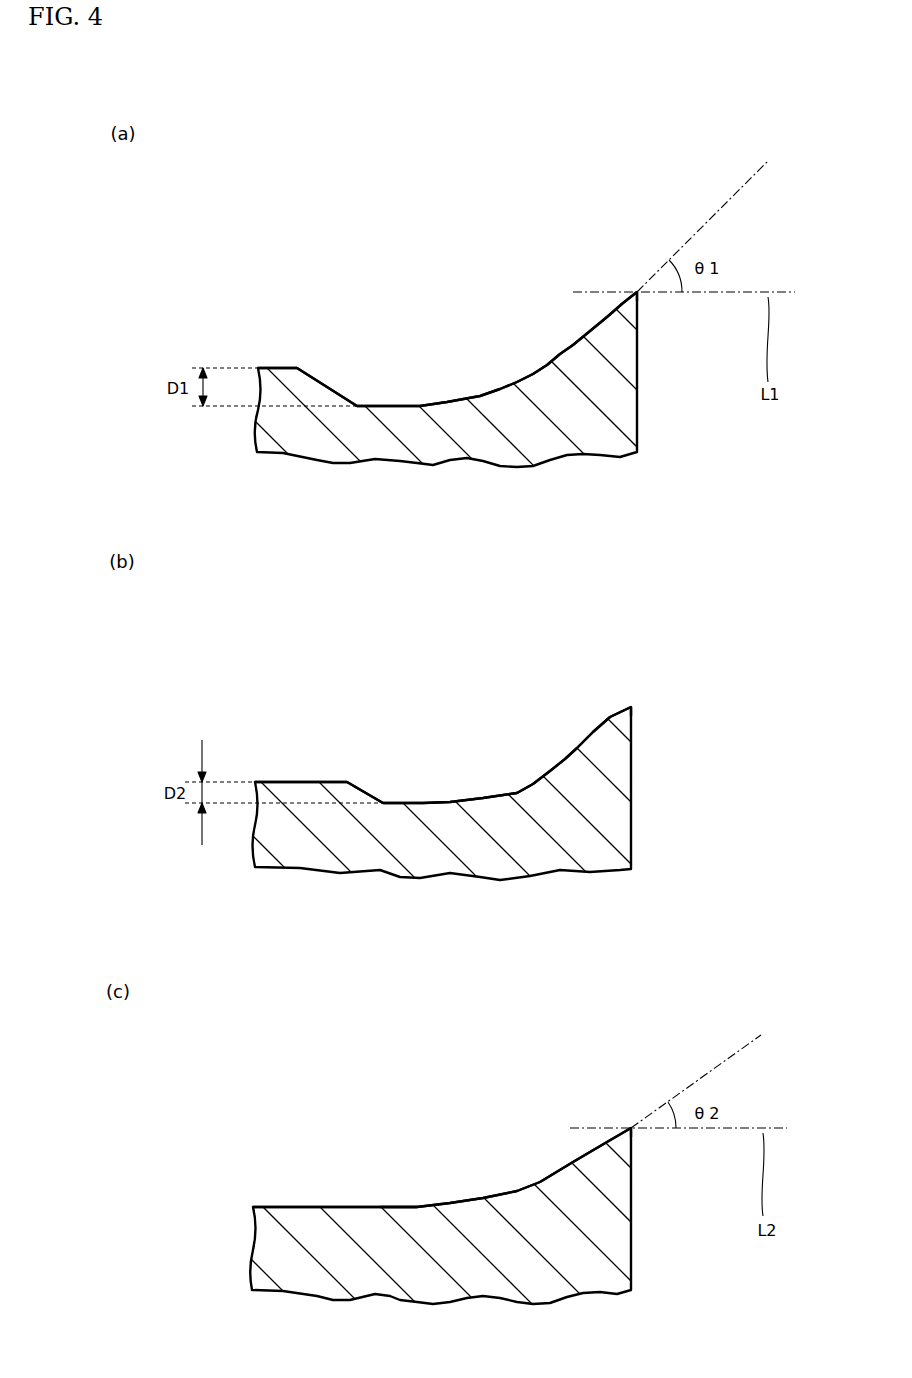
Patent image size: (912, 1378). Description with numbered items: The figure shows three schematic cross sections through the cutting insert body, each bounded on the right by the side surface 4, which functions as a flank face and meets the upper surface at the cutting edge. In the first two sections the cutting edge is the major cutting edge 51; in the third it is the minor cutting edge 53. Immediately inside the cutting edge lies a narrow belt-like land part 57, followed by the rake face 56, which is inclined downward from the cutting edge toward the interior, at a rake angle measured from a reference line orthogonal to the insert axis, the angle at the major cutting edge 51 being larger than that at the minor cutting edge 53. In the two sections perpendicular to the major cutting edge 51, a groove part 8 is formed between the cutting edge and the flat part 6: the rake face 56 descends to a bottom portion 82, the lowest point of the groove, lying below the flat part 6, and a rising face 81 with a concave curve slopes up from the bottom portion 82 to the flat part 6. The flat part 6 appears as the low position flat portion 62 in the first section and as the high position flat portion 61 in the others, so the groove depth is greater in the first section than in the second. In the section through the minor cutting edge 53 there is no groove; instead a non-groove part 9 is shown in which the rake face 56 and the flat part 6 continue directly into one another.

The side surface 4 is at (637, 395).
The flat part 6 is at (335, 715).
The low position flat portion 62 is at (278, 367).
The high position flat portion 61 is at (293, 782).
The groove part 8 is at (562, 235).
The rising face 81 is at (320, 403).
The bottom portion 82 is at (397, 406).
The rake face 56 is at (544, 366).
The land part 57 is at (631, 285).
The major cutting edge 51 is at (637, 291).
The minor cutting edge 53 is at (631, 1128).
The non-groove part 9 is at (418, 1207).